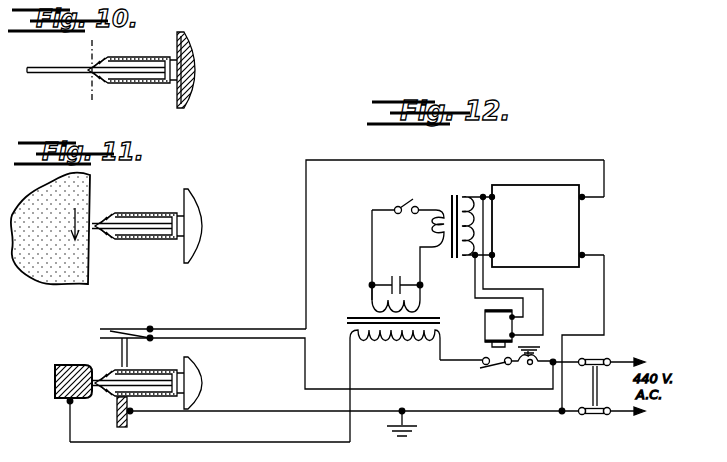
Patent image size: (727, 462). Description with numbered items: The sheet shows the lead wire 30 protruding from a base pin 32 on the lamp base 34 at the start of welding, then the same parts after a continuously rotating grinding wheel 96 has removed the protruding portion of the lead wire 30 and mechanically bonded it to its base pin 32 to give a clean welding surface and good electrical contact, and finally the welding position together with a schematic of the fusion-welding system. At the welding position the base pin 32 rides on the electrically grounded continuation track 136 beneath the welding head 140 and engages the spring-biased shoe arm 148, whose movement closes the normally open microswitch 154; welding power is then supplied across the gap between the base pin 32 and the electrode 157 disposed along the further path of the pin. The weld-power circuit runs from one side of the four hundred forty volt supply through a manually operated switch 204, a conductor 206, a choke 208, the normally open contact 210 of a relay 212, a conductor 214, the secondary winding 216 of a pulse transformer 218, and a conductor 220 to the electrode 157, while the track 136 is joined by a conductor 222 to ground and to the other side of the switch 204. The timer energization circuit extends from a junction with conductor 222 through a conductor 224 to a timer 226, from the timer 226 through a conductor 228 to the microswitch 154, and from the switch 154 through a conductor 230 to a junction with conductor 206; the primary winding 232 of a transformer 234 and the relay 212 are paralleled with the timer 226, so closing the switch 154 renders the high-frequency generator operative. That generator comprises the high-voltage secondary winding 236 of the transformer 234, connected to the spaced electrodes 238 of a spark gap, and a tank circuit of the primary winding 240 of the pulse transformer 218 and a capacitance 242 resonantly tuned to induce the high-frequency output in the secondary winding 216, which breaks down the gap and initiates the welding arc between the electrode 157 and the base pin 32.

In FIG. 10, the lead wire 30 is at (96, 83).
In FIG. 11, the lead wire 30 is at (132, 209).
In FIG. 12, the lead wire 30 is at (132, 367).
In FIG. 10, the base pin 32 is at (132, 87).
In FIG. 11, the base pin 32 is at (139, 207).
In FIG. 12, the base pin 32 is at (159, 376).
In FIG. 10, the base 34 is at (201, 70).
In FIG. 11, the base 34 is at (204, 226).
In FIG. 12, the base 34 is at (204, 383).
In FIG. 11, the grinding wheel 96 is at (45, 265).
In FIG. 12, the continuation track 136 is at (115, 412).
In FIG. 12, the welding head 140 is at (51, 360).
In FIG. 12, the shoe arm 148 is at (120, 346).
In FIG. 12, the microswitch 154 is at (128, 327).
In FIG. 12, the electrode 157 is at (58, 399).
In FIG. 12, the manually operated switch 204 is at (591, 416).
In FIG. 12, the conductor 206 is at (570, 362).
In FIG. 12, the choke 208 is at (541, 365).
In FIG. 12, the normally open contact 210 is at (486, 367).
In FIG. 12, the relay 212 is at (485, 326).
In FIG. 12, the conductor 214 is at (438, 354).
In FIG. 12, the secondary winding 216 is at (390, 342).
In FIG. 12, the pulse transformer 218 is at (348, 320).
In FIG. 12, the conductor 220 is at (318, 445).
In FIG. 12, the conductor 222 is at (250, 412).
In FIG. 12, the conductor 224 is at (604, 312).
In FIG. 12, the timer 226 is at (580, 244).
In FIG. 12, the conductor 228 is at (550, 160).
In FIG. 12, the conductor 230 is at (305, 360).
In FIG. 12, the primary winding 232 is at (470, 196).
In FIG. 12, the transformer 234 is at (455, 188).
In FIG. 12, the high-voltage secondary winding 236 is at (440, 226).
In FIG. 12, the spark gap electrodes 238 is at (410, 204).
In FIG. 12, the primary winding 240 is at (422, 302).
In FIG. 12, the capacitance 242 is at (390, 276).